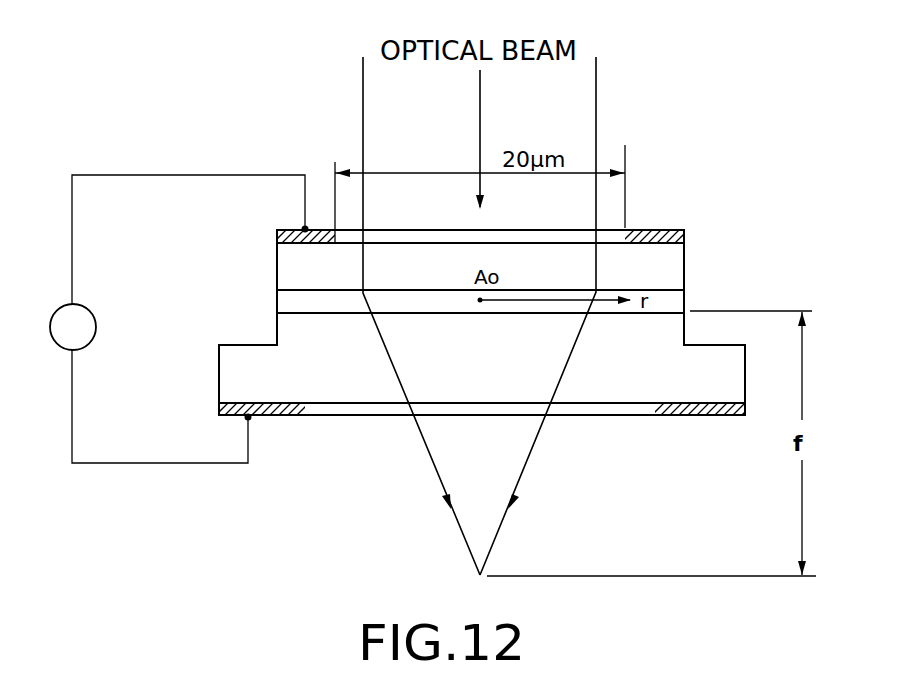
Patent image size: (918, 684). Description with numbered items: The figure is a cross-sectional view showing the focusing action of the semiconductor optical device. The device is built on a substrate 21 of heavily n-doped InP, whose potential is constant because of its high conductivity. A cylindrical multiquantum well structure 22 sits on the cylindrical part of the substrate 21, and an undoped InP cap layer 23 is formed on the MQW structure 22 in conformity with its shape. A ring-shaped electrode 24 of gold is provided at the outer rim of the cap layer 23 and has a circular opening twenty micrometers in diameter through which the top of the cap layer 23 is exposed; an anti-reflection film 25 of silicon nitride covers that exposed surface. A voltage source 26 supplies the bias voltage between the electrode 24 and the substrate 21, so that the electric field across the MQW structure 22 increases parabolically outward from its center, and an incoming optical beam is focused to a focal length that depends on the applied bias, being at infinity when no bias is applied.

The substrate 21 is at (737, 358).
The multiquantum well structure 22 is at (680, 302).
The cap layer 23 is at (677, 263).
The ring-shaped electrode 24 is at (658, 231).
The anti-reflection film 25 is at (705, 417).
The voltage source 26 is at (63, 308).